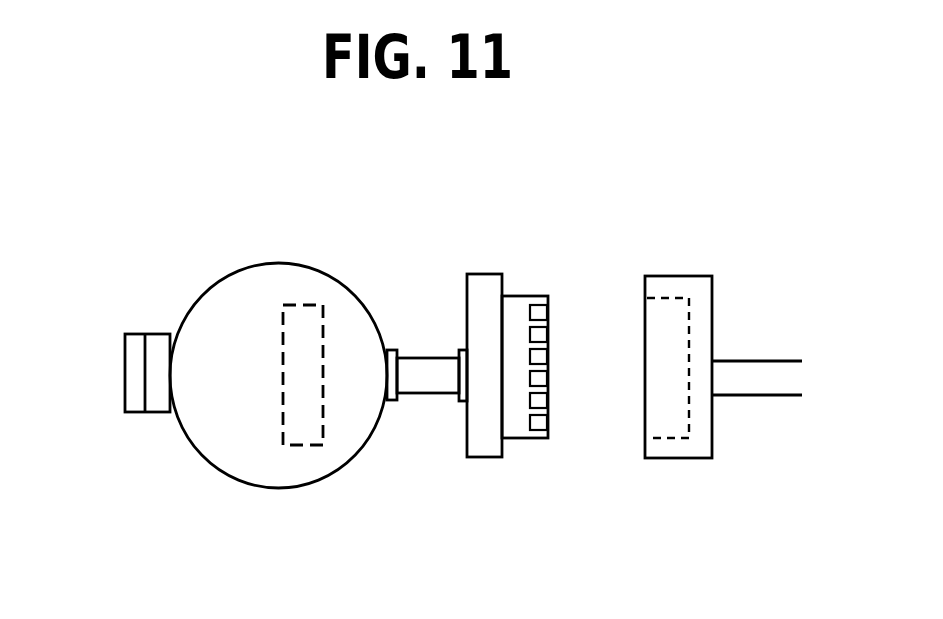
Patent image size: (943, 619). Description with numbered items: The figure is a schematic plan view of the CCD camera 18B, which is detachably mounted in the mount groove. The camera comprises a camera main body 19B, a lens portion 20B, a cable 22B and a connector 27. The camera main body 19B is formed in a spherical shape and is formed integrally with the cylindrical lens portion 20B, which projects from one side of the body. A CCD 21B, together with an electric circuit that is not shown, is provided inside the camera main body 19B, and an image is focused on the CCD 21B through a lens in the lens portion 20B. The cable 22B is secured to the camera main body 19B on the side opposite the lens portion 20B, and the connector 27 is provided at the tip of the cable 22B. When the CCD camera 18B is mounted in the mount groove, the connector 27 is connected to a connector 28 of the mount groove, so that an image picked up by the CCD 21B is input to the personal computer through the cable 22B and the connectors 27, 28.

The CCD camera 18B is at (342, 257).
The camera main body 19B is at (362, 294).
The lens portion 20B is at (157, 410).
The CCD 21B is at (299, 447).
The cable 22B is at (427, 380).
The connector 27 is at (518, 427).
The connector 28 is at (685, 283).